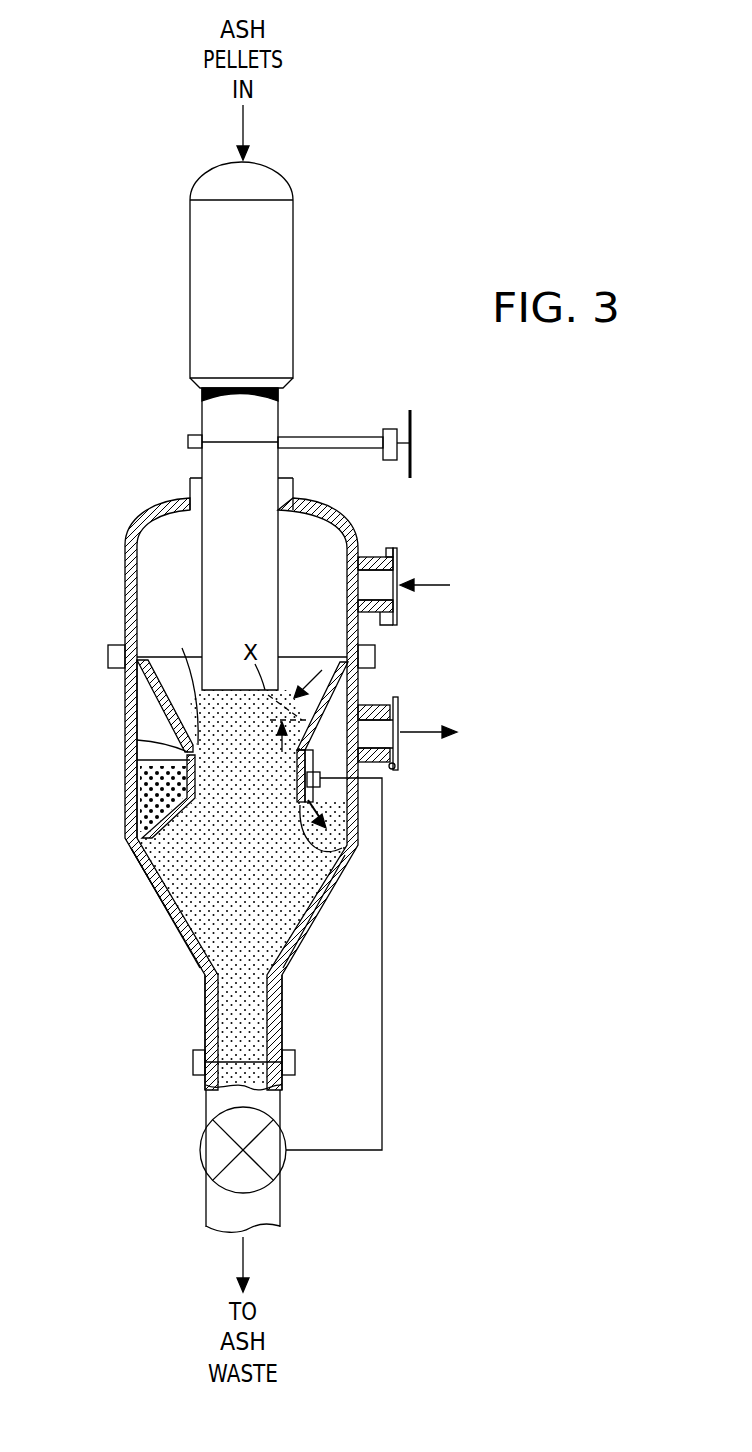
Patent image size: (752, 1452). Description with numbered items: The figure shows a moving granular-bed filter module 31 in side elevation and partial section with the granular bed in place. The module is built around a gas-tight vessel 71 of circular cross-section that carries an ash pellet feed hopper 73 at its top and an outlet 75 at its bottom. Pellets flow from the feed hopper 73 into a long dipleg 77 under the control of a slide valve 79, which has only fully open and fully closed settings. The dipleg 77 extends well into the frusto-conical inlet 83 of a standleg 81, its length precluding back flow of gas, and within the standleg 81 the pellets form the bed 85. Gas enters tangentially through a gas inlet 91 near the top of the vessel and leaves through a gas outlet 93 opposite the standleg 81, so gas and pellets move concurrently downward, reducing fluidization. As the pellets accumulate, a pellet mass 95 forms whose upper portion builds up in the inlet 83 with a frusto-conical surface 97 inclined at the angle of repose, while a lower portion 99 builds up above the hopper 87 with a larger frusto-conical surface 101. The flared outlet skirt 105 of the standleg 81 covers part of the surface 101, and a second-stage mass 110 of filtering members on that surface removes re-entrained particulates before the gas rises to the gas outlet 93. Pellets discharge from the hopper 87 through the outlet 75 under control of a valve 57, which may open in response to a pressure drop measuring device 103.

The moving granular-bed filter module 31 is at (92, 516).
The valve 57 is at (210, 1165).
The gas-tight vessel 71 is at (125, 804).
The ash pellet feed hopper 73 is at (190, 284).
The outlet 75 is at (205, 1012).
The dipleg 77 is at (220, 568).
The slide valve 79 is at (336, 440).
The standleg 81 is at (137, 740).
The frusto-conical inlet 83 is at (137, 708).
The bed 85 is at (258, 862).
The hopper 87 is at (182, 930).
The gas inlet 91 is at (397, 566).
The gas outlet 93 is at (397, 766).
The pellet mass 95 is at (137, 762).
The surface of the upper portion of the pellet mass 97 is at (175, 684).
The lower portion of the pellet mass 99 is at (165, 893).
The frusto-conical surface 101 is at (345, 858).
The pressure drop measuring device 103 is at (320, 782).
The frusto-conical outlet skirt 105 is at (137, 832).
The second-stage mass 110 is at (332, 842).